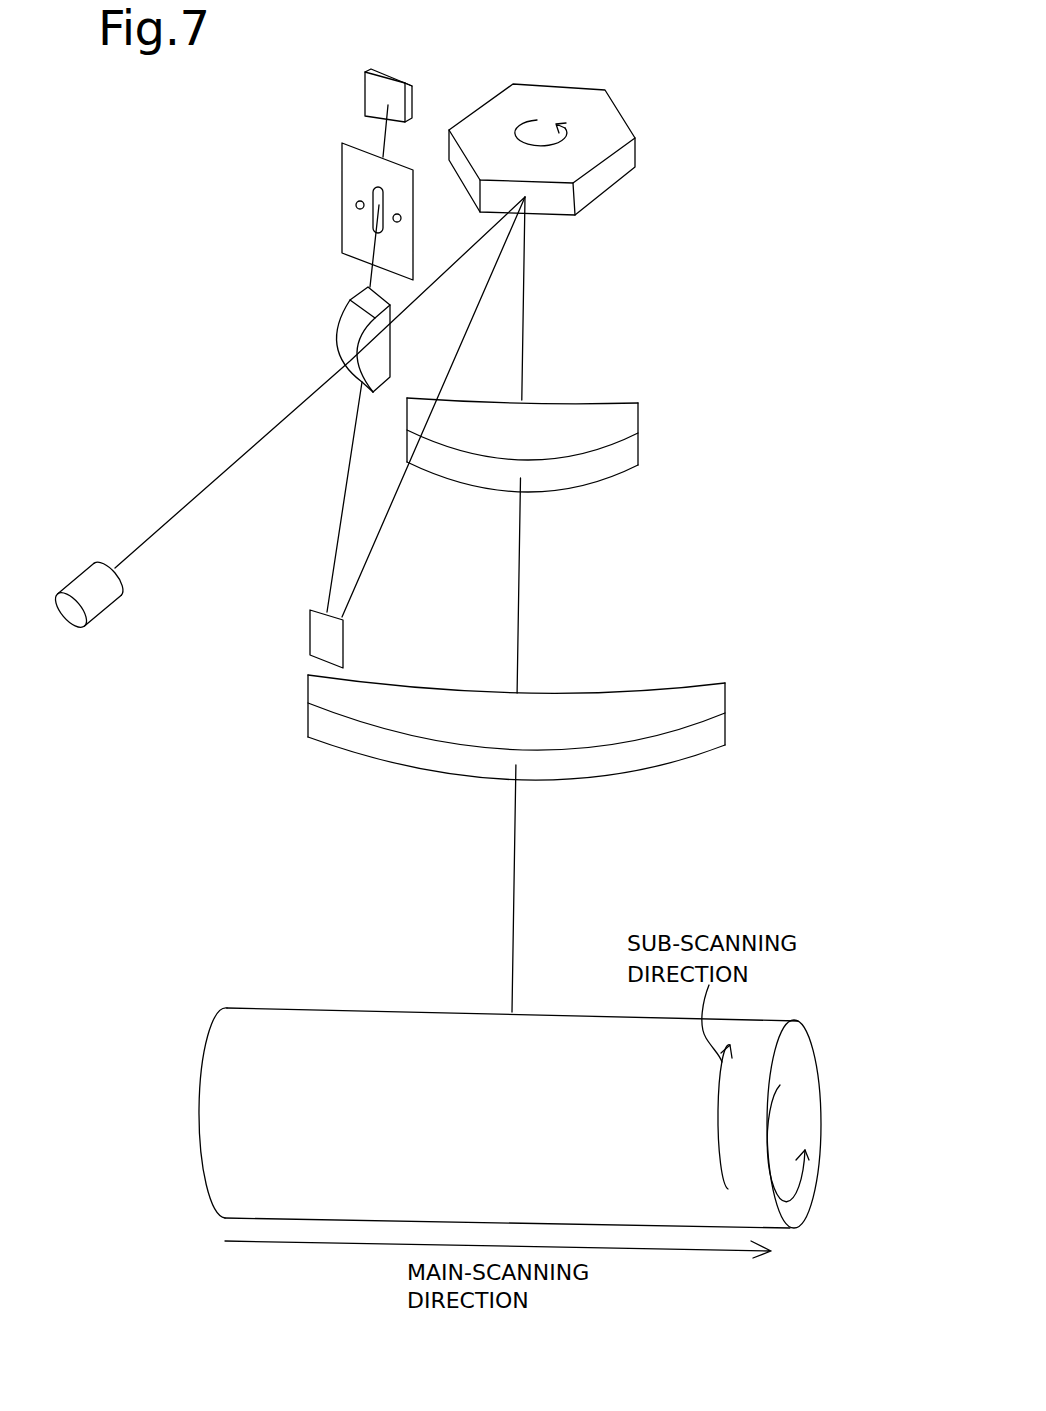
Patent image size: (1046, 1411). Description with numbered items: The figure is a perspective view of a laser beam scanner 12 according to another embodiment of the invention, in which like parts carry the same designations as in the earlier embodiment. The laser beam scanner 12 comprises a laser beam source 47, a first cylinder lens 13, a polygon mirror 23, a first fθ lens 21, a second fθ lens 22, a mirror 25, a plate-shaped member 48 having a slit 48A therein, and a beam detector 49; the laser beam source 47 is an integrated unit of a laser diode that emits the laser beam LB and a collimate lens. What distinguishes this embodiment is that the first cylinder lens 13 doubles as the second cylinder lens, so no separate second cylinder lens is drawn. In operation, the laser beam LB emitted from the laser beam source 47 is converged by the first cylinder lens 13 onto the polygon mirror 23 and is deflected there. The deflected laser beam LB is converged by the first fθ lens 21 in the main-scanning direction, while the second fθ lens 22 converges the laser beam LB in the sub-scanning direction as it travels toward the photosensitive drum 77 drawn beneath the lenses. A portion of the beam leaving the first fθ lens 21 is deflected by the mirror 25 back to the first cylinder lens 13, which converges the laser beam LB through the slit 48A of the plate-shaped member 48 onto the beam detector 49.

The laser beam scanner 12 is at (783, 266).
The first cylinder lens 13 is at (340, 333).
The first fθ lens 21 is at (638, 430).
The second fθ lens 22 is at (725, 715).
The polygon mirror 23 is at (620, 110).
The mirror 25 is at (310, 633).
The laser beam source 47 is at (95, 563).
The plate-shaped member 48 is at (342, 168).
The slit 48A is at (377, 215).
The beam detector 49 is at (398, 80).
The photosensitive drum 77 is at (305, 1008).
The laser beam LB is at (188, 500).